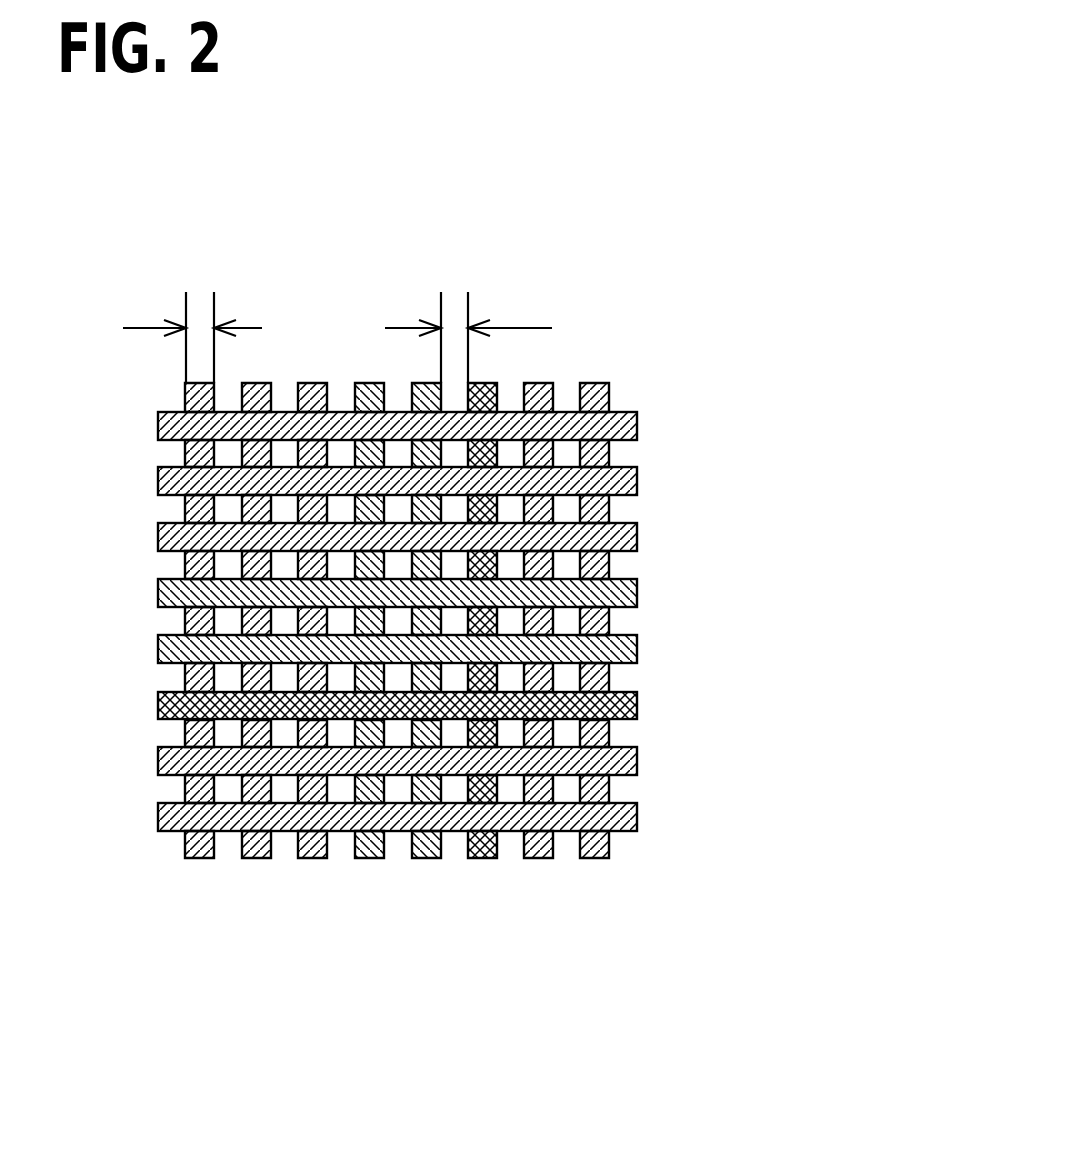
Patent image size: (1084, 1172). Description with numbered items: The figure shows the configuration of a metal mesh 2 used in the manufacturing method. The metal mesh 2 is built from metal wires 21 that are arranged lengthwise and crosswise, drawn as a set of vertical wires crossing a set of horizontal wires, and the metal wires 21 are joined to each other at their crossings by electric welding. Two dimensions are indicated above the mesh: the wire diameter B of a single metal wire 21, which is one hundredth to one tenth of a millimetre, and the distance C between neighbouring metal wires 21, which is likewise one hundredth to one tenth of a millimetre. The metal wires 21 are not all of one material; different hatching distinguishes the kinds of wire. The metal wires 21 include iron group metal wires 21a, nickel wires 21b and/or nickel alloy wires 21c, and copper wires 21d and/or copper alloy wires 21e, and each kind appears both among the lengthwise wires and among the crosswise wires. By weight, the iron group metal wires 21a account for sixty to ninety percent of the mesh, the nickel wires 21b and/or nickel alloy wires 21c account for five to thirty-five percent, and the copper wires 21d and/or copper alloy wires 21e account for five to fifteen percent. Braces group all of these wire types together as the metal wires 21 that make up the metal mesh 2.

The metal mesh 2 is at (150, 218).
The metal wires 21 is at (888, 477).
The iron group metal wires 21a is at (637, 432).
The nickel wires 21b is at (637, 583).
The nickel alloy wires 21c is at (637, 637).
The copper wires 21d is at (637, 701).
The copper alloy wires 21e is at (497, 940).
The wire diameter B is at (192, 317).
The distance between the metal wires C is at (468, 317).